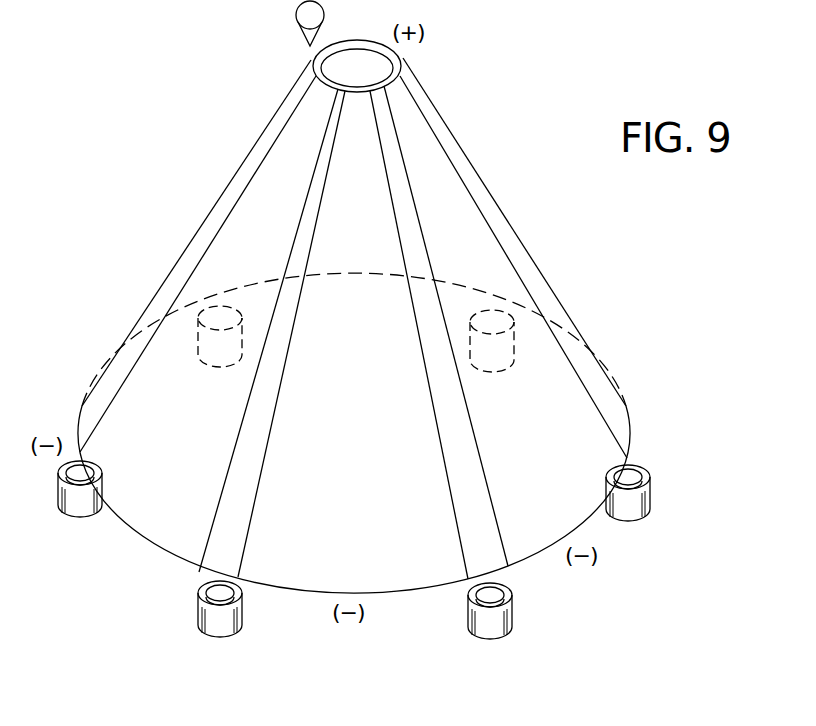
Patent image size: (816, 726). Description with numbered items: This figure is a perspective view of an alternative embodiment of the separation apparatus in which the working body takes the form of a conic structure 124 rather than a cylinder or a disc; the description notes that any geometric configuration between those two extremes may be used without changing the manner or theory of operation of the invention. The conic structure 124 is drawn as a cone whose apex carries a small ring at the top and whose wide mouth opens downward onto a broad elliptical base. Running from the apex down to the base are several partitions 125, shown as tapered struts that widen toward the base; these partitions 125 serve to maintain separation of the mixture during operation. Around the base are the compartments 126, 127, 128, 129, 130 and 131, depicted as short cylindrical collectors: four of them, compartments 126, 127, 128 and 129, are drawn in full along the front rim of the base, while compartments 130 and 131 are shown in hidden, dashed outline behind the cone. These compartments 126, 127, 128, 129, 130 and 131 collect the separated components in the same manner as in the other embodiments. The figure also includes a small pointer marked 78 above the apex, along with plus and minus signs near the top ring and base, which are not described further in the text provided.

The fluid flow direction indicator 78 is at (296, 26).
The conic structure 124 is at (478, 139).
The partitions 125 is at (98, 382).
The compartment 126 is at (67, 519).
The compartment 127 is at (232, 636).
The compartment 128 is at (508, 638).
The compartment 129 is at (641, 523).
The compartment 130 is at (471, 304).
The compartment 131 is at (223, 302).